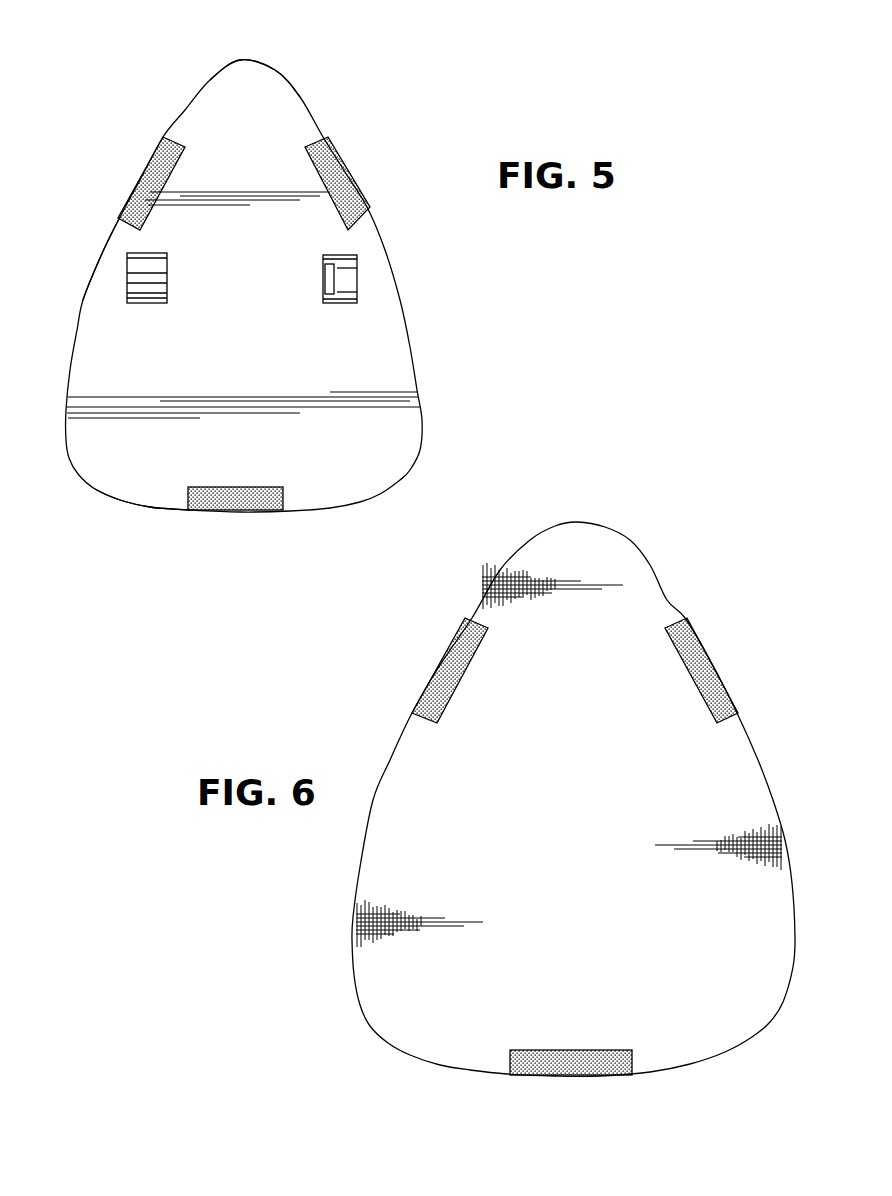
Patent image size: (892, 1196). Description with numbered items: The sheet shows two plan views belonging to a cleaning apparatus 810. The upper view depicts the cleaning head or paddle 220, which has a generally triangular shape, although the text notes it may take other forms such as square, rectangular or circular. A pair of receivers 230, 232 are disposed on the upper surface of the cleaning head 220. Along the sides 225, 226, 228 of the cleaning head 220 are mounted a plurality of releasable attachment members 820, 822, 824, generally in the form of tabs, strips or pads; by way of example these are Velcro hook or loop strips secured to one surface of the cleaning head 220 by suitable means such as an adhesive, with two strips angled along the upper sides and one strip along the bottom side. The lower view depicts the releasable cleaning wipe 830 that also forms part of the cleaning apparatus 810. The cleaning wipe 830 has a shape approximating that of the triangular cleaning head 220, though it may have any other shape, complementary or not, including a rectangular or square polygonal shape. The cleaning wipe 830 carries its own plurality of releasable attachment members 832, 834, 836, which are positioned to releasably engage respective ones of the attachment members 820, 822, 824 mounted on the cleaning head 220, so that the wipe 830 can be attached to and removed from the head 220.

In FIG. 5, the cleaning apparatus 810 is at (133, 63).
In FIG. 5, the side 226 is at (298, 98).
In FIG. 5, the side 225 is at (107, 230).
In FIG. 5, the side 228 is at (130, 507).
In FIG. 5, the cleaning head 220 is at (223, 370).
In FIG. 5, the receiver 230 is at (128, 265).
In FIG. 5, the receiver 232 is at (350, 275).
In FIG. 5, the releasable attachment member 820 is at (143, 173).
In FIG. 5, the releasable attachment member 822 is at (348, 182).
In FIG. 5, the releasable attachment member 824 is at (240, 498).
In FIG. 6, the cleaning wipe 830 is at (738, 585).
In FIG. 6, the releasable attachment member 832 is at (443, 663).
In FIG. 6, the releasable attachment member 834 is at (713, 668).
In FIG. 6, the releasable attachment member 836 is at (570, 1063).